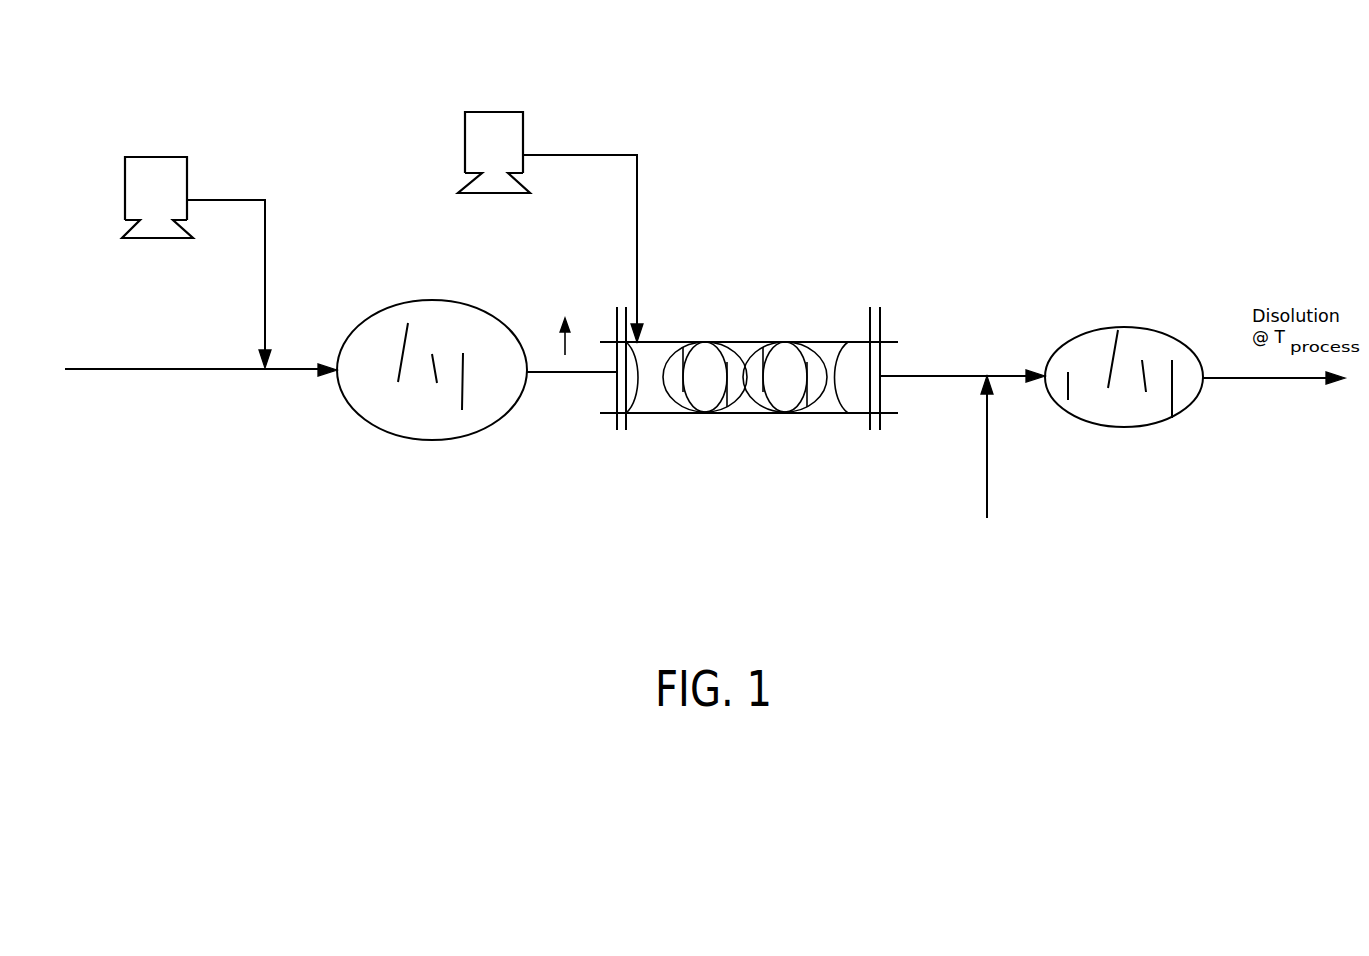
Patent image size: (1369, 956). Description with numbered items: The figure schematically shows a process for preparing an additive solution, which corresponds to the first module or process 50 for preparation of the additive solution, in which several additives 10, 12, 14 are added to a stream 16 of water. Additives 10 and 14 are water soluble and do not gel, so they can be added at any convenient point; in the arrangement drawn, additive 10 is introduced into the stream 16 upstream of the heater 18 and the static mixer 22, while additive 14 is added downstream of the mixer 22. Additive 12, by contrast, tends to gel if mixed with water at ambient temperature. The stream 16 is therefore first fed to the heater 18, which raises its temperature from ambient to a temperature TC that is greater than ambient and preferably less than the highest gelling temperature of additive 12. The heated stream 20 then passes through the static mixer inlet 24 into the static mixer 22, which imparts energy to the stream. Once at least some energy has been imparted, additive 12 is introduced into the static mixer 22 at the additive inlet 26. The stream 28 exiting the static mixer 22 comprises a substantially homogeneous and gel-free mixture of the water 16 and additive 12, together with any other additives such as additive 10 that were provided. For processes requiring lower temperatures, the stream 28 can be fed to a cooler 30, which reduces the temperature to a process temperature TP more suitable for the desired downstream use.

The additive 10 is at (228, 100).
The additive 12 is at (530, 68).
The additive 14 is at (983, 580).
The stream of water 16 is at (210, 368).
The heater 18 is at (445, 300).
The heated stream 20 is at (575, 375).
The static mixer 22 is at (745, 342).
The static mixer inlet 24 is at (608, 360).
The additive inlet 26 is at (642, 343).
The stream 28 is at (935, 375).
The cooler 30 is at (1133, 427).
The first module or process 50 is at (868, 170).